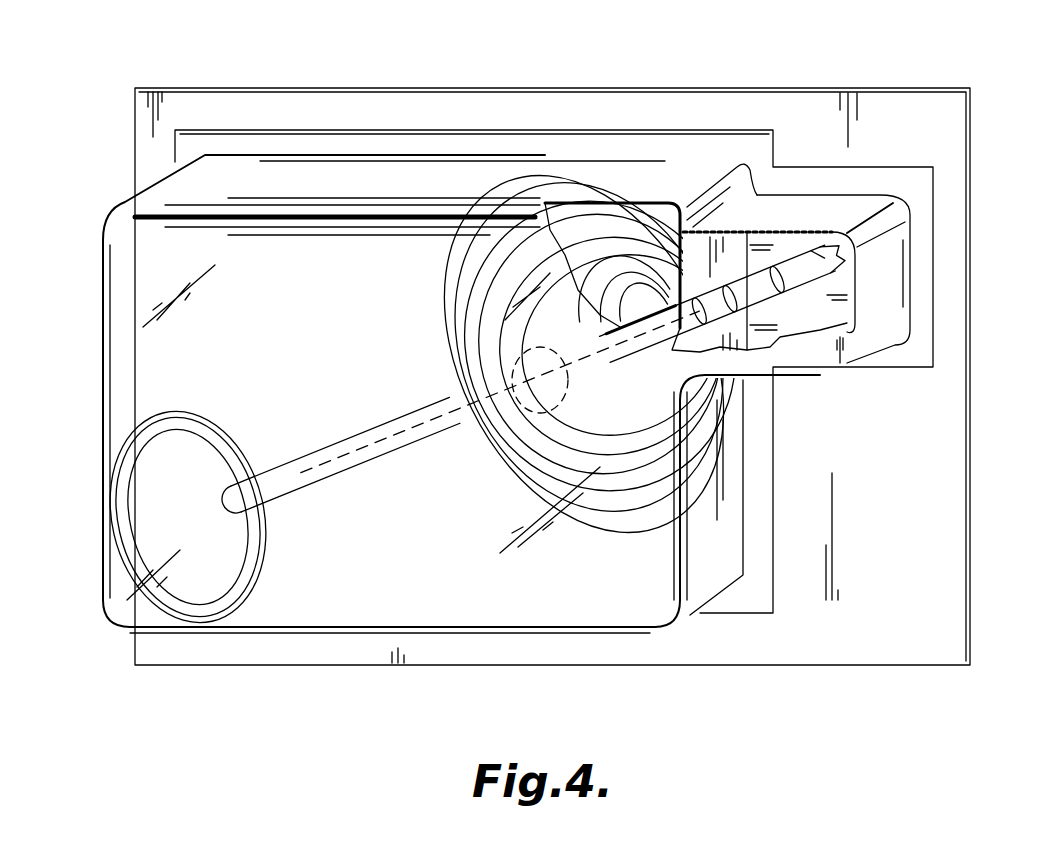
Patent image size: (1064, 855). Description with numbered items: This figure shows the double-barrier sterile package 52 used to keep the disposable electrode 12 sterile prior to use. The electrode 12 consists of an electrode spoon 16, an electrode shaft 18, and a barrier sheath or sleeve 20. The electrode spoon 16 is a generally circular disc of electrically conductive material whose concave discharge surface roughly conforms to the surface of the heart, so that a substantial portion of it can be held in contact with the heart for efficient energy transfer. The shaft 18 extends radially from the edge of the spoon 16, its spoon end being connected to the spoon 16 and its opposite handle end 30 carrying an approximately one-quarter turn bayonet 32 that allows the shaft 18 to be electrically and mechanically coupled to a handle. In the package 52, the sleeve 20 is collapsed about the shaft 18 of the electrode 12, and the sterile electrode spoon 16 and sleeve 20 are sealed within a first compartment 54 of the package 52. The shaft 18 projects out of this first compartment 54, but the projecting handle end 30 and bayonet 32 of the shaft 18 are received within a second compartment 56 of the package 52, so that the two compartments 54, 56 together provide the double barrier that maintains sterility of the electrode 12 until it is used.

The electrode 12 is at (292, 448).
The electrode spoon 16 is at (165, 504).
The electrode shaft 18 is at (712, 195).
The barrier sheath or sleeve 20 is at (600, 240).
The handle end 30 is at (787, 283).
The bayonet 32 is at (850, 262).
The double-barrier sterile package 52 is at (978, 548).
The first compartment 54 is at (330, 610).
The second compartment 56 is at (803, 238).